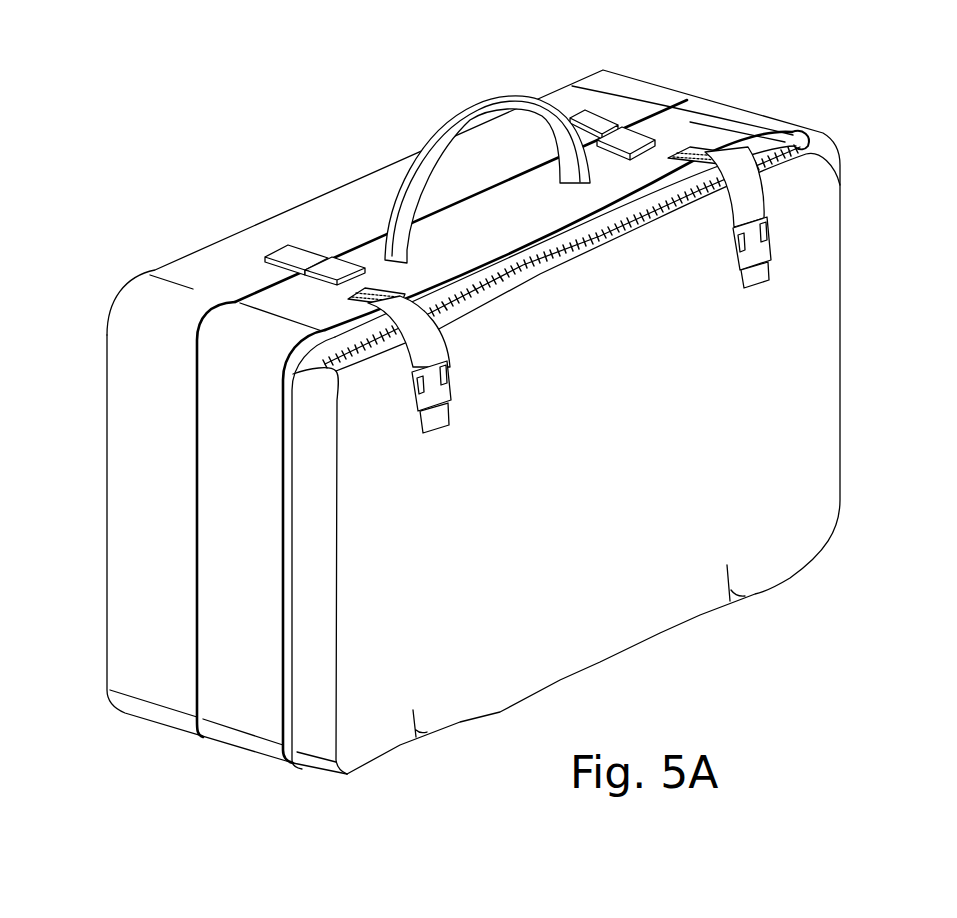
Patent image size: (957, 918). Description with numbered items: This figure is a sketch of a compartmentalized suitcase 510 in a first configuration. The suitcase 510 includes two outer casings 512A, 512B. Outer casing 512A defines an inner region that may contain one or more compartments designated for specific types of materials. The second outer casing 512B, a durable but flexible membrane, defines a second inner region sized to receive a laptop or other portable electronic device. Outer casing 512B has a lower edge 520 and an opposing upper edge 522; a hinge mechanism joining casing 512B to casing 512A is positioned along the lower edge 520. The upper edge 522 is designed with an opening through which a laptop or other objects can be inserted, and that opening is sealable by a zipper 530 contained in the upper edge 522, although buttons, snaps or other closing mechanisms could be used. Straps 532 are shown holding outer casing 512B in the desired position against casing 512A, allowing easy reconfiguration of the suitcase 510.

The suitcase 510 is at (507, 437).
The outer casing 512A is at (235, 738).
The outer casing 512B is at (300, 732).
The lower edge 520 is at (305, 775).
The upper edge 522 is at (774, 143).
The zipper 530 is at (783, 136).
The straps 532 is at (753, 194).